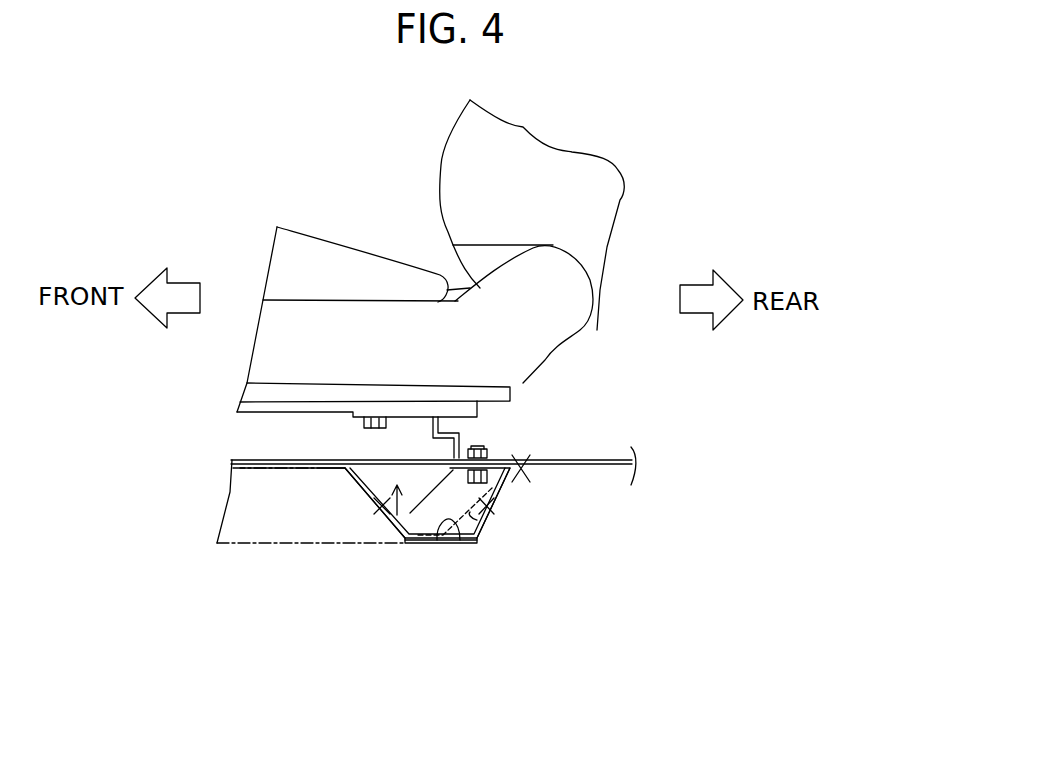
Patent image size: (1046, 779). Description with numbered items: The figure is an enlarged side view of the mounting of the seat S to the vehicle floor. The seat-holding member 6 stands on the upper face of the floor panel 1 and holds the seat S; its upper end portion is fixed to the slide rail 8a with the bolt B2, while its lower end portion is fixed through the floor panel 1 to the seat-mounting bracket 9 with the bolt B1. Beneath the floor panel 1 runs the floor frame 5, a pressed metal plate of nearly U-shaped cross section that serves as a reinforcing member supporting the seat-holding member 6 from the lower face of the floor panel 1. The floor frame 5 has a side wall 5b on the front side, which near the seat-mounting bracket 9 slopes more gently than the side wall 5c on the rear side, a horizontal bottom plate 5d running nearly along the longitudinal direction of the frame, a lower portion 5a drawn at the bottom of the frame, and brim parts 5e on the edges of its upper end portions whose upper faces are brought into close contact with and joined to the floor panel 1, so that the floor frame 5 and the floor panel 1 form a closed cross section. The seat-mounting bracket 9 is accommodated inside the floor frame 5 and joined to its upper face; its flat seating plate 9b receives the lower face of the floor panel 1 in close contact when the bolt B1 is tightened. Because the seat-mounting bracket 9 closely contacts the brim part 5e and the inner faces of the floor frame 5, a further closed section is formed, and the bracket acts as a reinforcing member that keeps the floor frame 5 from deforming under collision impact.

The seat S is at (608, 197).
The floor panel 1 is at (231, 461).
The floor frame 5 is at (478, 541).
The bottom wall of bracket 5a is at (403, 542).
The side wall on the front side 5b is at (365, 474).
The side wall on the rear side 5c is at (489, 528).
The bottom plate 5d is at (462, 540).
The brim parts 5e is at (330, 470).
The seat-holding member 6 is at (437, 423).
The slide rail 8a is at (273, 407).
The seat-mounting bracket 9 is at (427, 500).
The seating plate 9b is at (494, 462).
The bolt B1 is at (490, 451).
The bolt B2 is at (370, 432).